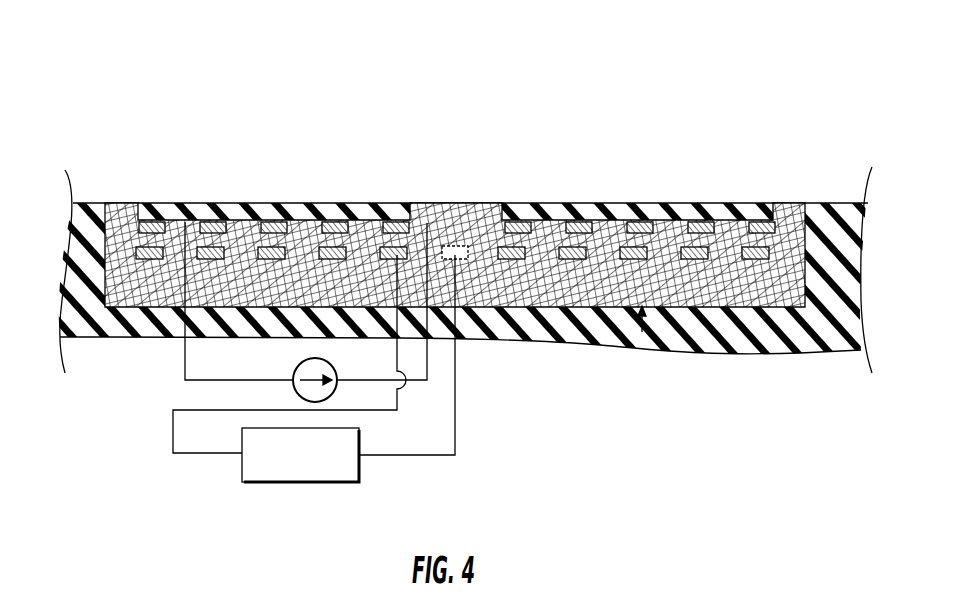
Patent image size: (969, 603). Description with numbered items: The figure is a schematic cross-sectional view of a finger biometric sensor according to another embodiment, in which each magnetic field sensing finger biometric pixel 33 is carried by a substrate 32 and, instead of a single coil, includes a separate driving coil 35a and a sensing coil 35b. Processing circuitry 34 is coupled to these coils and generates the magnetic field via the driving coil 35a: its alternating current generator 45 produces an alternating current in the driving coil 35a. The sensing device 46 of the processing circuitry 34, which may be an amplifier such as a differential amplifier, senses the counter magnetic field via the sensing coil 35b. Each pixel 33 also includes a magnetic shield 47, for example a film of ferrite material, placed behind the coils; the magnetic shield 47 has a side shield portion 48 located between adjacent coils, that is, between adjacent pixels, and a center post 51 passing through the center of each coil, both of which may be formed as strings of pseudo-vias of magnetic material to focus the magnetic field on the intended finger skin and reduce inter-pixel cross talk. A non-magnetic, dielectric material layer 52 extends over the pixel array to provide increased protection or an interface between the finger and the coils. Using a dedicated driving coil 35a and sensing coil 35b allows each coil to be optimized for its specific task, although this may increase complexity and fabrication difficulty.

The magnetic field sensing finger biometric pixel 33 is at (331, 84).
The substrate 32 is at (95, 262).
The processing circuitry 34 is at (144, 445).
The driving coil 35a is at (168, 203).
The sensing coil 35b is at (757, 258).
The alternating current generator 45 is at (338, 388).
The sensing device 46 is at (352, 484).
The magnetic shield 47 is at (650, 352).
The side shield portion 48 is at (120, 213).
The center post 51 is at (453, 217).
The non-magnetic, dielectric material layer 52 is at (95, 203).